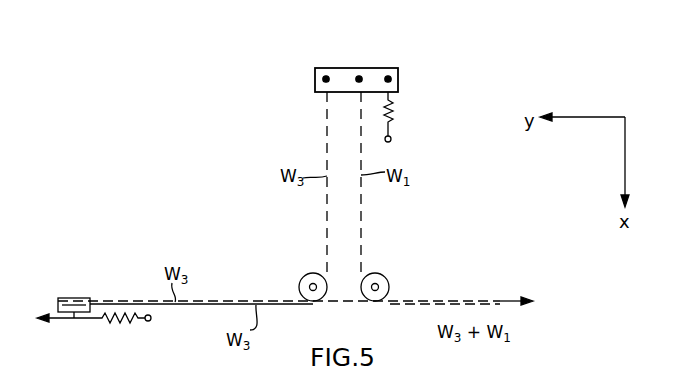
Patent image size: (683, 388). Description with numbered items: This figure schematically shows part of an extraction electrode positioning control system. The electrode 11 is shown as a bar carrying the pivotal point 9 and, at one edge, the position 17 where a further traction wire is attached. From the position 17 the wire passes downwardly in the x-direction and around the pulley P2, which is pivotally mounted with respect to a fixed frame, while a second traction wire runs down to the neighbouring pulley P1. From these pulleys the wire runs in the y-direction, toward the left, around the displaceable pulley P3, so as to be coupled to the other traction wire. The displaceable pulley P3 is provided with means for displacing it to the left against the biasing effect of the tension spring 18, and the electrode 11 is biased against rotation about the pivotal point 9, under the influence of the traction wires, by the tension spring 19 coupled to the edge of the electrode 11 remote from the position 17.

The pivotal point 9 is at (359, 78).
The electrode 11 is at (380, 68).
The attachment position 17 is at (326, 77).
The tension spring 18 is at (120, 319).
The tension spring 19 is at (393, 112).
The pulley P1 is at (386, 278).
The pulley P2 is at (302, 279).
The displaceable pulley P3 is at (76, 298).